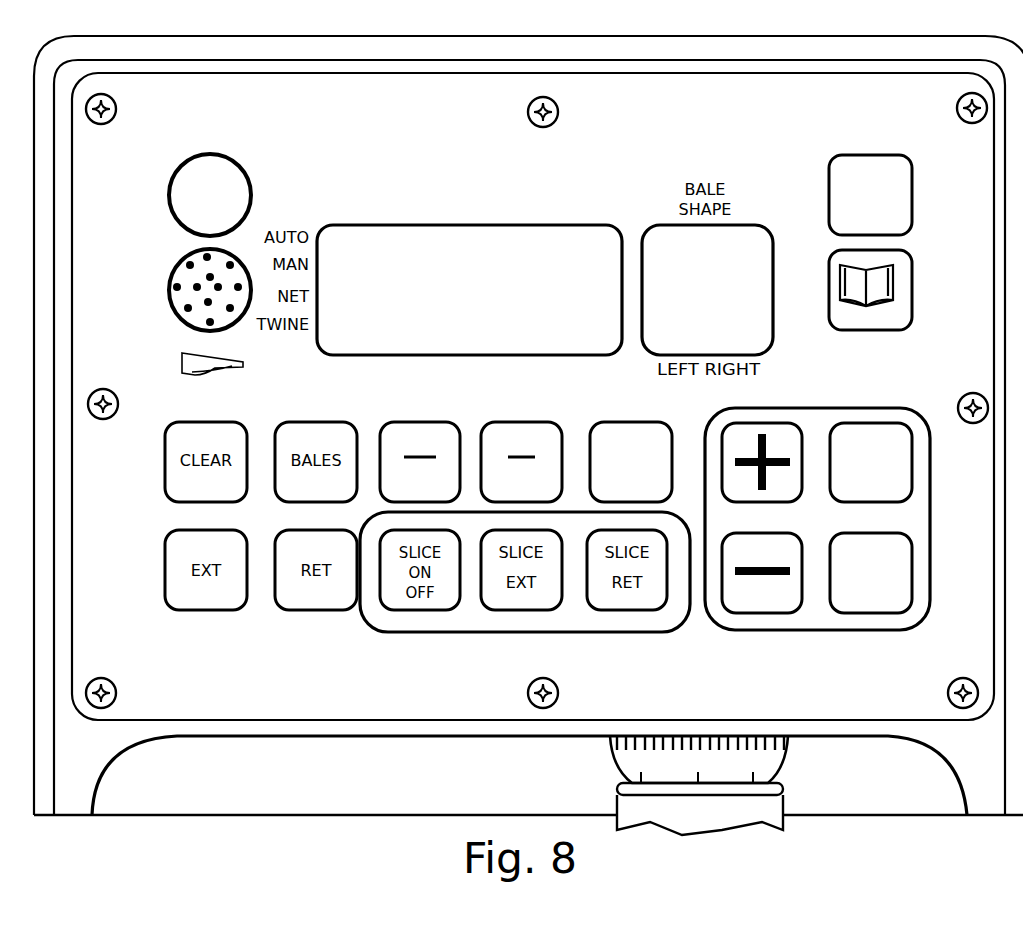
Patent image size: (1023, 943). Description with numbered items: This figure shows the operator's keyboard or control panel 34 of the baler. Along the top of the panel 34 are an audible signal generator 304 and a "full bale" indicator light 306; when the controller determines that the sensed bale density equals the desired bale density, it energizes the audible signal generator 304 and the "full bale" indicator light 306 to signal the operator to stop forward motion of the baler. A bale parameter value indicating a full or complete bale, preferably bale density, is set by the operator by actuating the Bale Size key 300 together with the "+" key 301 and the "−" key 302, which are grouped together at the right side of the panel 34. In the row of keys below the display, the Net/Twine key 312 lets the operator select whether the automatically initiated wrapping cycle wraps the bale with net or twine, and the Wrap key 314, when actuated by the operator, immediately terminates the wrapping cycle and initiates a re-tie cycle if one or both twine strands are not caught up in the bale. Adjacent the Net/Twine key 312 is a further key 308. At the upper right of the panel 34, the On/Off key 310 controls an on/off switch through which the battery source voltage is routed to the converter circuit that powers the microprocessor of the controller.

The operator's control panel 34 is at (278, 817).
The Bale Size key 300 is at (769, 517).
The "+" key 301 is at (727, 440).
The "−" key 302 is at (753, 613).
The audible signal generator 304 is at (168, 287).
The "full bale" indicator light 306 is at (377, 172).
The auto/manual mode button 308 is at (398, 425).
The On/Off key 310 is at (829, 190).
The Net/Twine key 312 is at (495, 425).
The Wrap key 314 is at (594, 425).